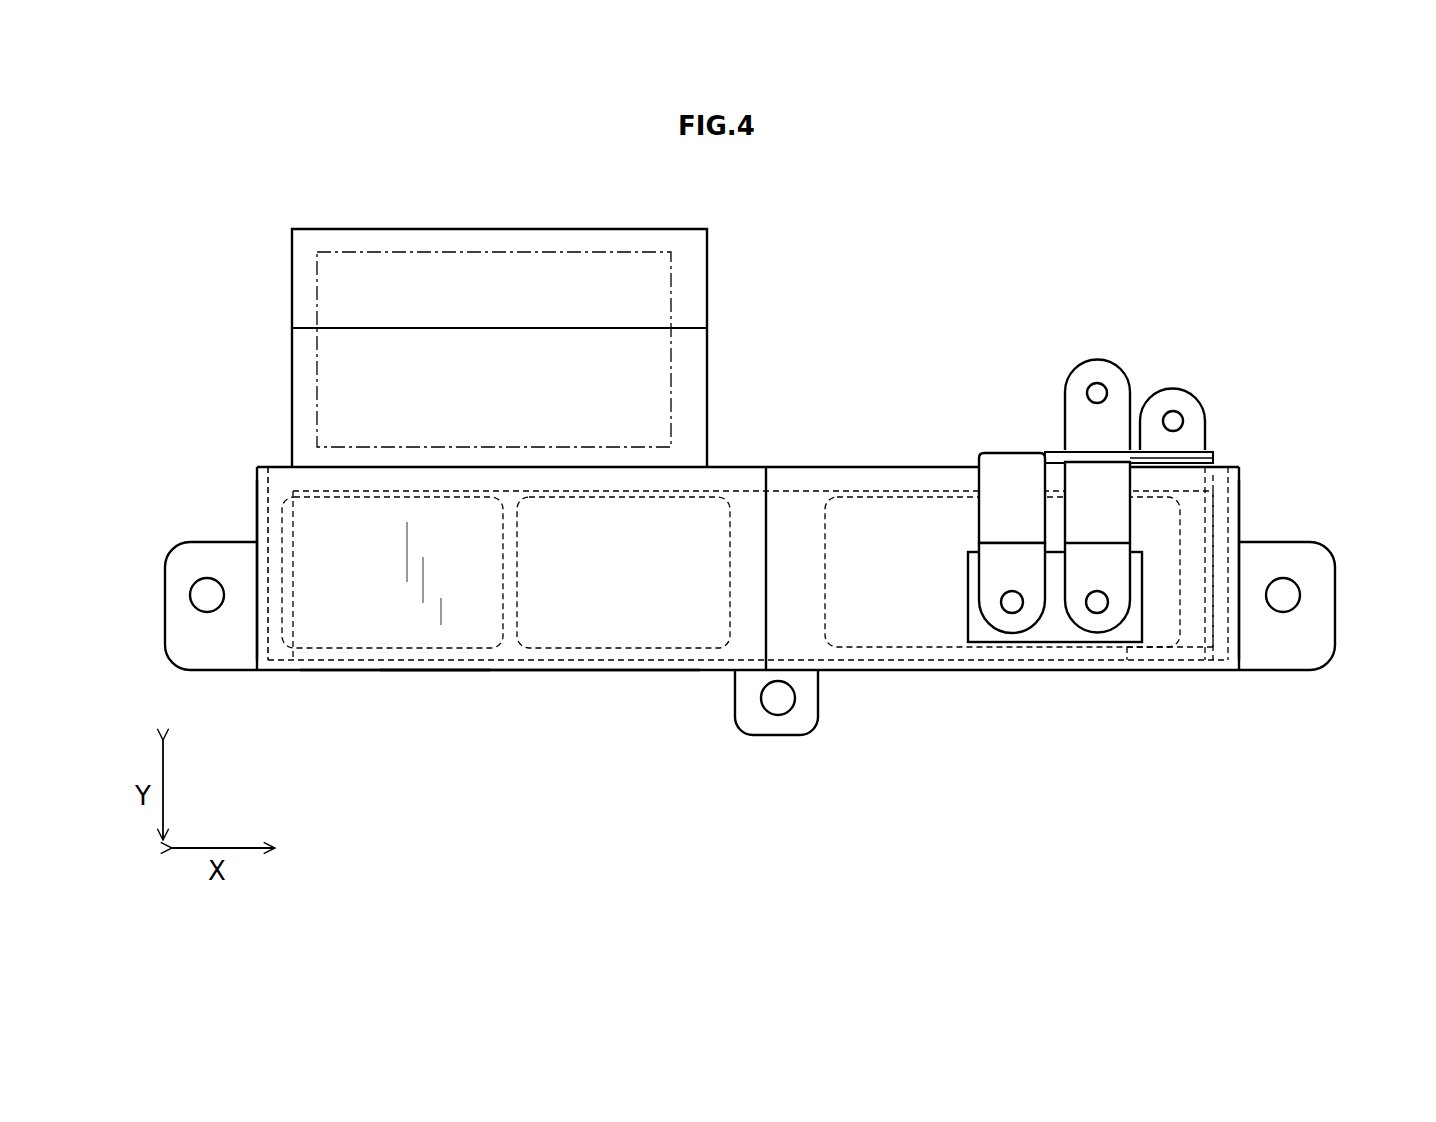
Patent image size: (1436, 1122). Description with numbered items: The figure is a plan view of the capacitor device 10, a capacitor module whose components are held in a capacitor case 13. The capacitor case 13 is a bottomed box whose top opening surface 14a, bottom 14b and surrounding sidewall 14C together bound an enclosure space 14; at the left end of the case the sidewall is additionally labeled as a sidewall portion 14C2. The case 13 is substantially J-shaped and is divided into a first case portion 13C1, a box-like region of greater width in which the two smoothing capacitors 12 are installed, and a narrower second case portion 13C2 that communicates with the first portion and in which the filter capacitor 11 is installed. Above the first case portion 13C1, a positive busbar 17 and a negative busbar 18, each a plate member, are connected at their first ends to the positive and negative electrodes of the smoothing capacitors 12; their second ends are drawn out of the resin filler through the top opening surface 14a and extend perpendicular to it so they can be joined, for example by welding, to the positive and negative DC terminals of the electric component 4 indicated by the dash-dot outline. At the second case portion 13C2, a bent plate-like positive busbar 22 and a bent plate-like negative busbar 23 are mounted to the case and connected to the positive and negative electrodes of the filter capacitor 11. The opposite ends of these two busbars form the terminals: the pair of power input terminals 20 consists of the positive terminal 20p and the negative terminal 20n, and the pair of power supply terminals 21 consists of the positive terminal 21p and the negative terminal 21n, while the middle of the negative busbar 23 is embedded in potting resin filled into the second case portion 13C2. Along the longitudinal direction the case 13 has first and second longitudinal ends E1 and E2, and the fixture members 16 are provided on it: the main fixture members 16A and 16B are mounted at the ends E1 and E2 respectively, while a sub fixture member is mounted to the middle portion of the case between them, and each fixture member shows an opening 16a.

The electric component 4 is at (565, 255).
The capacitor device 10 is at (963, 300).
The filter capacitor 11 is at (865, 495).
The smoothing capacitor 12 is at (355, 652).
The capacitor case 13 is at (698, 672).
The first case portion 13C1 is at (433, 698).
The second case portion 13C2 is at (1230, 453).
The enclosure space 14 is at (656, 537).
The top opening surface 14a is at (268, 467).
The bottom 14b is at (490, 670).
The surrounding sidewall 14C is at (234, 624).
The second cover connecting portion 14C2 is at (262, 670).
The fixture members 16 is at (763, 630).
The main fixture member 16A is at (187, 585).
The main fixture member 16B is at (1293, 540).
The mounting hole 16a is at (198, 593).
The positive busbar 17 is at (708, 397).
The negative busbar 18 is at (708, 290).
The pair of power input terminals 20 is at (1146, 344).
The negative terminal 20n is at (1097, 375).
The positive terminal 20p is at (1179, 373).
The pair of power supply terminals 21 is at (1065, 624).
The positive terminal 21p is at (1012, 613).
The negative terminal 21n is at (1097, 613).
The positive busbar 22 is at (978, 478).
The negative busbar 23 is at (1132, 527).
The first longitudinal end E1 is at (257, 510).
The second longitudinal end E2 is at (1239, 512).